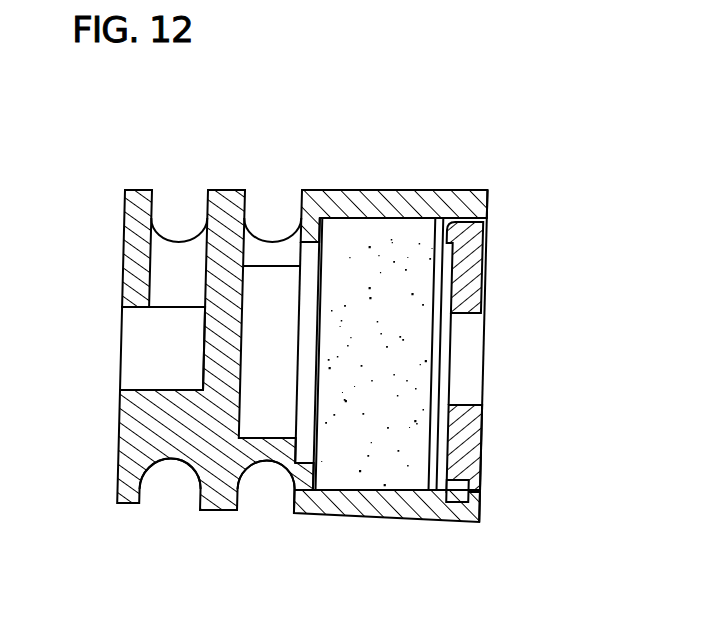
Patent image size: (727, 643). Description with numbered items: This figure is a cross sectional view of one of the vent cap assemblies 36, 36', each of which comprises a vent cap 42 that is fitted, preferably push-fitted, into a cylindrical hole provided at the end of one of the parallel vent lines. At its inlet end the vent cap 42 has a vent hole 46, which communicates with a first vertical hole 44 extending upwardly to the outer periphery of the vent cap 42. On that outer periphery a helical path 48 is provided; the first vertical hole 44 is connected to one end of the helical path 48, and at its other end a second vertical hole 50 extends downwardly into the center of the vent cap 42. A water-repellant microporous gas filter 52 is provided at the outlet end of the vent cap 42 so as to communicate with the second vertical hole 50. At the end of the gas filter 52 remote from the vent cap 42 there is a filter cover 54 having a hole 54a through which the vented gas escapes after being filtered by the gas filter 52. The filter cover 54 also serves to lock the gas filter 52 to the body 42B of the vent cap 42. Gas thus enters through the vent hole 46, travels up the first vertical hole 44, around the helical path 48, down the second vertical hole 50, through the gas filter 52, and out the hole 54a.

The vent cap assembly 36 is at (428, 152).
The vent cap assembly 36' is at (536, 310).
The vent cap 42 is at (129, 258).
The body 42B is at (331, 515).
The first vertical hole 44 is at (185, 274).
The vent hole 46 is at (135, 369).
The helical path 48 is at (277, 492).
The second vertical hole 50 is at (285, 317).
The water-repellant microporous gas filter 52 is at (363, 453).
The filter cover 54 is at (474, 299).
The hole 54a is at (470, 380).